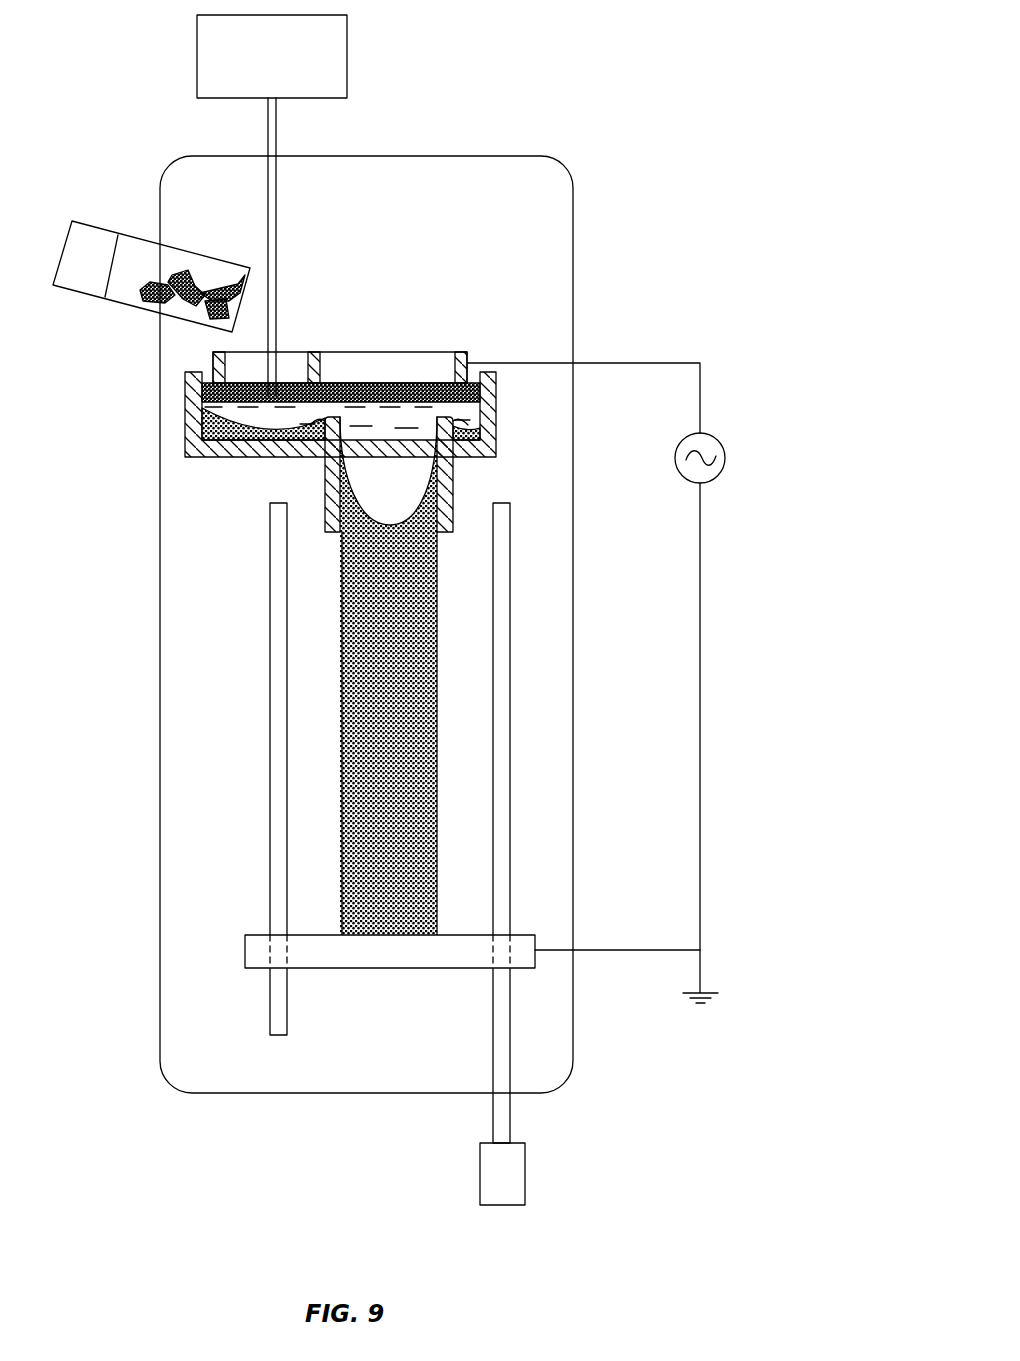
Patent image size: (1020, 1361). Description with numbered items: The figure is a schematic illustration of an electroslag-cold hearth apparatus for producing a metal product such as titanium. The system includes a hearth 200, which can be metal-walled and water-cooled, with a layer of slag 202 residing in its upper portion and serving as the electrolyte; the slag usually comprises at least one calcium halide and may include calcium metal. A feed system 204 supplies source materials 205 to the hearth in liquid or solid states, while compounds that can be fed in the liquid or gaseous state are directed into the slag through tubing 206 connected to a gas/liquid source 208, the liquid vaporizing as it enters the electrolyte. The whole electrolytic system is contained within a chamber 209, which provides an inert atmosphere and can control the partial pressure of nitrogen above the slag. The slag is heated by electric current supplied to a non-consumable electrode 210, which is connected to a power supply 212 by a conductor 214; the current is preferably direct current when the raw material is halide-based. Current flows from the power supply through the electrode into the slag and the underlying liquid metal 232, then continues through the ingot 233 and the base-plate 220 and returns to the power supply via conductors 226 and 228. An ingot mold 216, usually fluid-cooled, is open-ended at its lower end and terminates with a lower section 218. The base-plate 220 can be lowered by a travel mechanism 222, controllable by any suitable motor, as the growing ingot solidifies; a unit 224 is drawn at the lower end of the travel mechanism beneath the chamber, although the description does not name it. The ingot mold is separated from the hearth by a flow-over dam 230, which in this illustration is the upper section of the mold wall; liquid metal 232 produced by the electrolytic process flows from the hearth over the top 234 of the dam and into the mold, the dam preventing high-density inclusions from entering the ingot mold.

The hearth 200 is at (193, 405).
The slag 202 is at (405, 395).
The feed system 204 is at (92, 237).
The source materials 205 is at (212, 278).
The tubing 206 is at (278, 192).
The gas/liquid source 208 is at (296, 70).
The chamber 209 is at (180, 953).
The non-consumable electrode 210 is at (460, 360).
The power supply 212 is at (722, 448).
The conductor 214 is at (700, 393).
The ingot mold 216 is at (485, 433).
The lower section 218 is at (333, 513).
The base-plate 220 is at (414, 964).
The travel mechanism 222 is at (275, 843).
The drive unit 224 is at (518, 1170).
The conductor 226 is at (638, 950).
The conductor 228 is at (700, 898).
The flow-over dam 230 is at (327, 425).
The liquid metal 232 is at (412, 467).
The ingot 233 is at (414, 745).
The top of the dam 234 is at (335, 423).